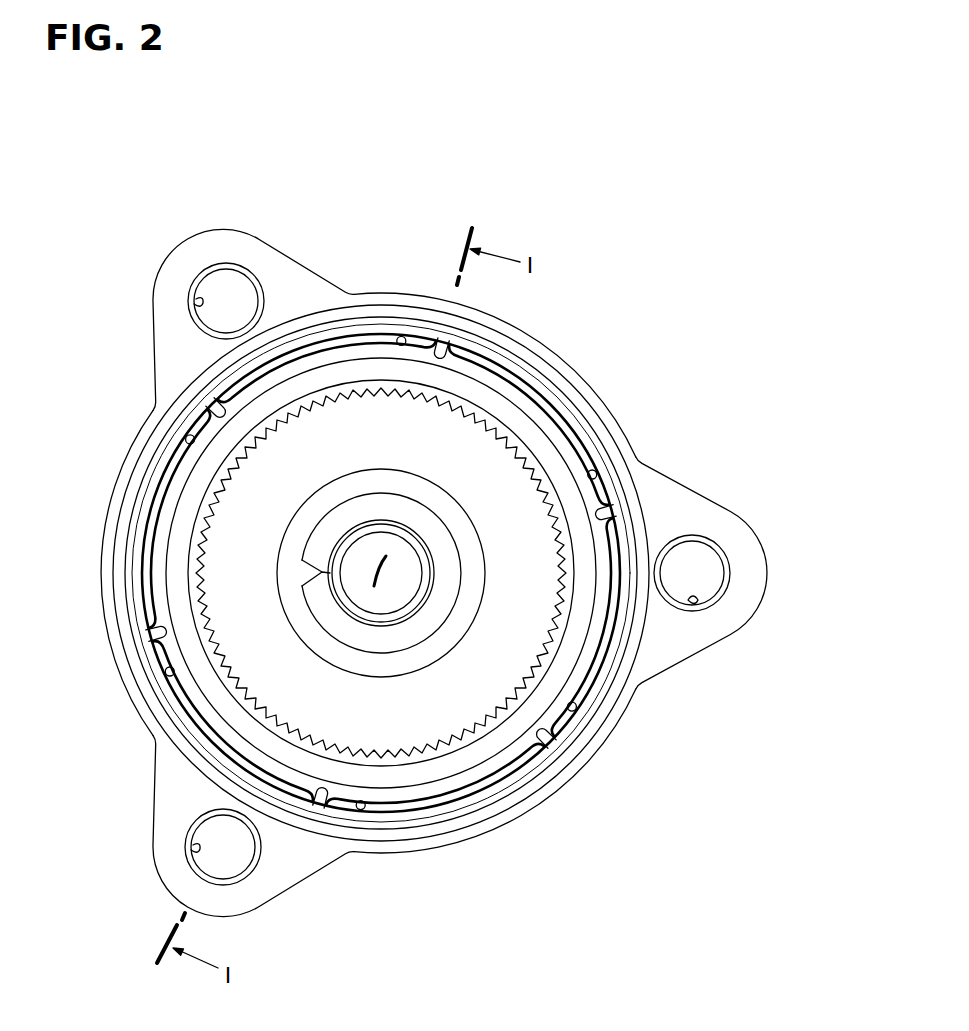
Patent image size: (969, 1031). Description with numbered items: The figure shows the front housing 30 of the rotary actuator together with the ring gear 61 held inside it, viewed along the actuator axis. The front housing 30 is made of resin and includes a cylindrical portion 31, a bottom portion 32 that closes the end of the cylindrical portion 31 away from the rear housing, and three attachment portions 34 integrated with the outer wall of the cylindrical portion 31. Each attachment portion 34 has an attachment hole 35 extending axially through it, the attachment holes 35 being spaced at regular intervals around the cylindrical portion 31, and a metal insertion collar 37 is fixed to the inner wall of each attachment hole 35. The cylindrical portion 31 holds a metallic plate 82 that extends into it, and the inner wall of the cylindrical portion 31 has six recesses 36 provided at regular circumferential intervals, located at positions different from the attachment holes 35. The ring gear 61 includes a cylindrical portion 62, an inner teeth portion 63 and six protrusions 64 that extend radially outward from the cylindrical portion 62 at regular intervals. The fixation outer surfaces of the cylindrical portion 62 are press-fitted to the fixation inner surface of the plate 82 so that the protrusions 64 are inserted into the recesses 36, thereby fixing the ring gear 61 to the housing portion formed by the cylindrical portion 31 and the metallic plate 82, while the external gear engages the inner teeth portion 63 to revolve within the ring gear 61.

The front housing 30 is at (592, 380).
The cylindrical portion 31 is at (103, 526).
The bottom portion 32 is at (247, 557).
The attachment portions 34 is at (183, 242).
The attachment hole 35 is at (196, 303).
The recesses 36 is at (462, 352).
The insertion collar 37 is at (244, 268).
The ring gear 61 is at (400, 805).
The cylindrical portion 62 is at (472, 775).
The inner teeth portion 63 is at (437, 755).
The protrusions 64 is at (437, 335).
The metallic plate 82 is at (163, 488).